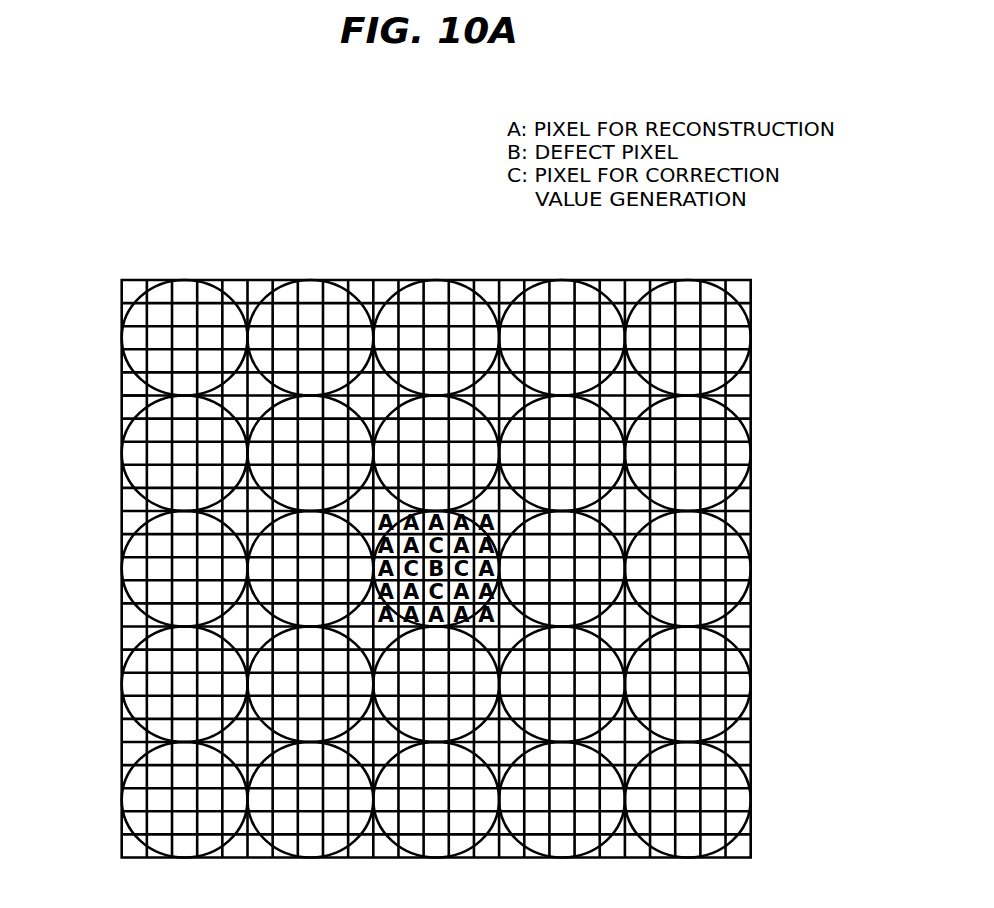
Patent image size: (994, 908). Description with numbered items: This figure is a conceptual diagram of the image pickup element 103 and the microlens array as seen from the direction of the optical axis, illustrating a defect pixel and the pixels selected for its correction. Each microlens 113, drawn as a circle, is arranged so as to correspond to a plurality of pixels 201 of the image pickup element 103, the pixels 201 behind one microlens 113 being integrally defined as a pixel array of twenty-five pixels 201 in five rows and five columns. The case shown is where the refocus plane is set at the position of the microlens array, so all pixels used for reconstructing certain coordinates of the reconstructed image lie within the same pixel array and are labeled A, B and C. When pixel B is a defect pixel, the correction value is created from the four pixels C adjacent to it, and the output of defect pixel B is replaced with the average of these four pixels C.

The image pickup element 103 is at (751, 280).
The pixel 201 is at (133, 287).
The microlens 113 is at (121, 396).